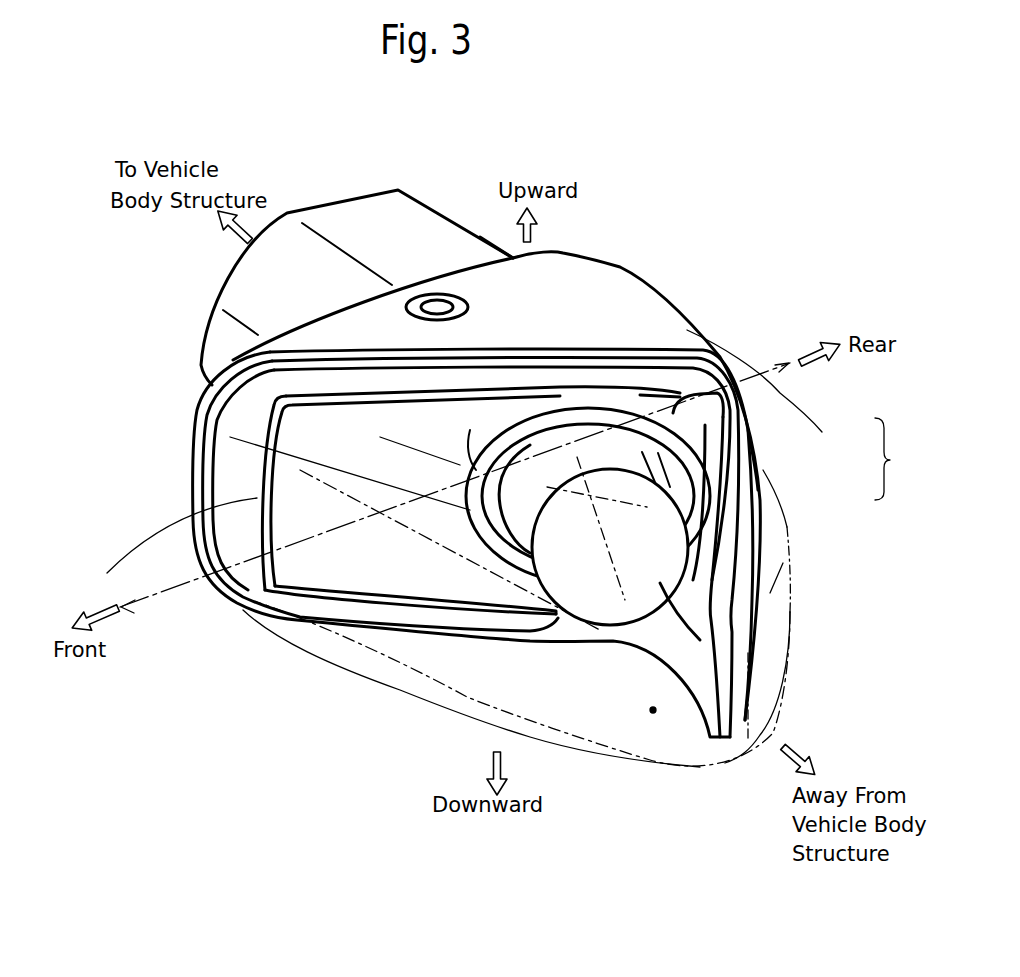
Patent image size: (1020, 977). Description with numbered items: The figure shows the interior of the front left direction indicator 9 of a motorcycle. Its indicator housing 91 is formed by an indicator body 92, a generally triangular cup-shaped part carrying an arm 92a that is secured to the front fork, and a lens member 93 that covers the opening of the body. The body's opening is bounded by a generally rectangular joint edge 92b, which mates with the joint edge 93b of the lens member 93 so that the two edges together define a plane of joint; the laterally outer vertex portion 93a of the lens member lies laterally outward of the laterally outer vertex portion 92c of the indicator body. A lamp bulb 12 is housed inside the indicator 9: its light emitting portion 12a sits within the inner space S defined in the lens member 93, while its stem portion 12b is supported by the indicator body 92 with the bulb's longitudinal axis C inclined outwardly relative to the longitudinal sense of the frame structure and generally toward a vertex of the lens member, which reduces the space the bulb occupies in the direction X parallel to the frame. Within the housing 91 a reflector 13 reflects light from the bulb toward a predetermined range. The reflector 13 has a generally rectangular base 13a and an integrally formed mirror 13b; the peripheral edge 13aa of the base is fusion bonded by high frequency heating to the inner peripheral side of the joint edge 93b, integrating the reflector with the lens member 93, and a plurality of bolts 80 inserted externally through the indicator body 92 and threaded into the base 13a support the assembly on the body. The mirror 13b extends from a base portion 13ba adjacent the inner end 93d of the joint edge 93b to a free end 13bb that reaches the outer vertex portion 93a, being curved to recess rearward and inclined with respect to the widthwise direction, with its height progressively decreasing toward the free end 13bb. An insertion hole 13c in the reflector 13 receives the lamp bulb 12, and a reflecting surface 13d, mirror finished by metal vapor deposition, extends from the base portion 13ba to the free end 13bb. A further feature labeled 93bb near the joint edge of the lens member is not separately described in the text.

The front left direction indicator 9 is at (155, 492).
The lamp bulb 12 is at (625, 442).
The light emitting portion 12a is at (627, 600).
The stem portion 12b is at (567, 433).
The reflector 13 is at (268, 683).
The base 13a is at (243, 573).
The peripheral edge 13aa is at (370, 357).
The mirror 13b is at (244, 610).
The base portion 13ba is at (164, 554).
The free end 13bb is at (727, 635).
The insertion hole 13c is at (467, 470).
The reflecting surface 13d is at (425, 535).
The bolts 80 is at (449, 300).
The indicator housing 91 is at (904, 459).
The indicator body 92 is at (779, 391).
The arm 92a is at (391, 198).
The joint edge 92b is at (613, 343).
The laterally outer vertex portion 92c is at (763, 470).
The lens member 93 is at (793, 577).
The laterally outer vertex portion 93a is at (750, 707).
The joint edge 93b is at (427, 370).
The outer shell upper edge 93bb is at (197, 357).
The inner end 93d is at (195, 470).
The longitudinal axis C is at (613, 553).
The inner space S is at (653, 710).
The direction X is at (183, 587).